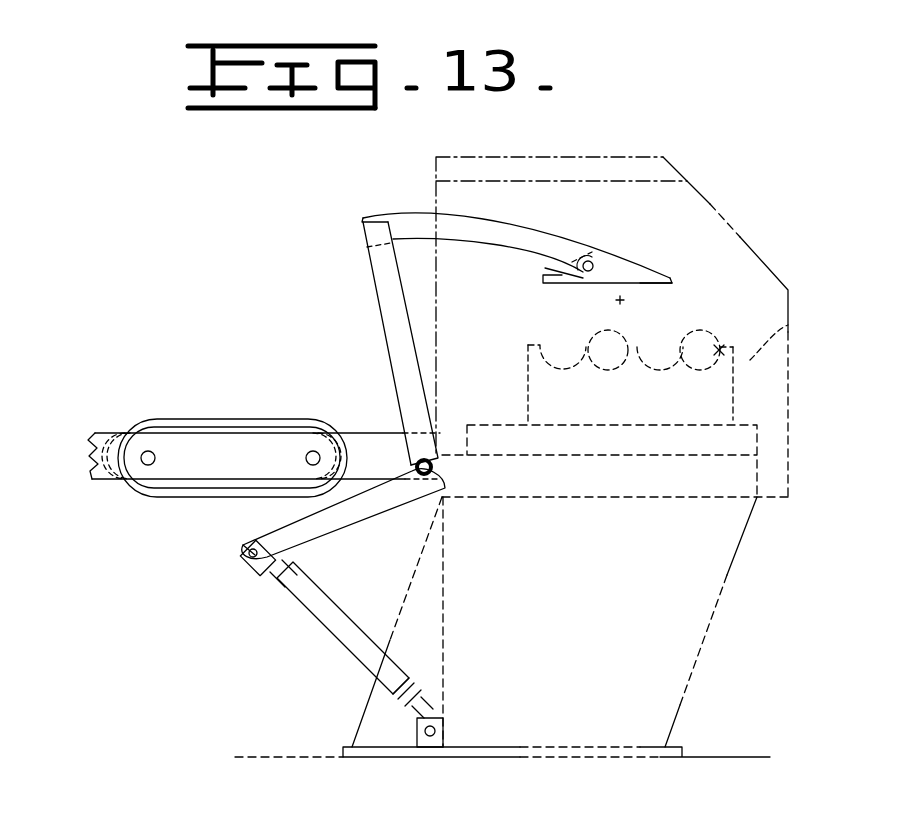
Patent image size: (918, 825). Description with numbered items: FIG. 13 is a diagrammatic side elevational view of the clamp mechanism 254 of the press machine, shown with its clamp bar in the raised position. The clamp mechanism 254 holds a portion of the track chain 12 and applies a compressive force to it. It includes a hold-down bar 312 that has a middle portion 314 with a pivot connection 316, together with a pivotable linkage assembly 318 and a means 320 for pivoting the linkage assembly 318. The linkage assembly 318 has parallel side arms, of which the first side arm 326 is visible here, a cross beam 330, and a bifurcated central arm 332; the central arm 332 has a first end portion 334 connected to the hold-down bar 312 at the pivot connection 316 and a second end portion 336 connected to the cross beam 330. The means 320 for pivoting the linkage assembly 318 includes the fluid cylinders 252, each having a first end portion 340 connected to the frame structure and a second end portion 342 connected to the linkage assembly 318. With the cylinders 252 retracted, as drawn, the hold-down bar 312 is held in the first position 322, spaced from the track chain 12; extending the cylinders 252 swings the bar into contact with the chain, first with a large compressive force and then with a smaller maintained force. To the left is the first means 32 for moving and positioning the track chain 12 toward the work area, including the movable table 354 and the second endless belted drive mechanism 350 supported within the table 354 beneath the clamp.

The track chain 12 is at (788, 322).
The first means for moving and positioning the track chain 32 is at (150, 370).
The fluid cylinders 252 is at (300, 612).
The clamp mechanism 254 is at (372, 370).
The hold-down bar 312 is at (647, 277).
The middle portion 314 is at (642, 258).
The pivot connection 316 is at (583, 275).
The pivotable linkage assembly 318 is at (298, 528).
The means for pivoting the linkage assembly 320 is at (330, 679).
The first position 322 is at (668, 296).
The first side arm 326 is at (378, 300).
The cross beam 330 is at (358, 240).
The bifurcated central arm 332 is at (546, 243).
The first end portion 334 is at (395, 205).
The second end portion 336 is at (555, 256).
The first end portion 340 is at (440, 702).
The second end portion 342 is at (300, 561).
The second endless belted drive mechanism 350 is at (240, 418).
The movable table 354 is at (102, 481).